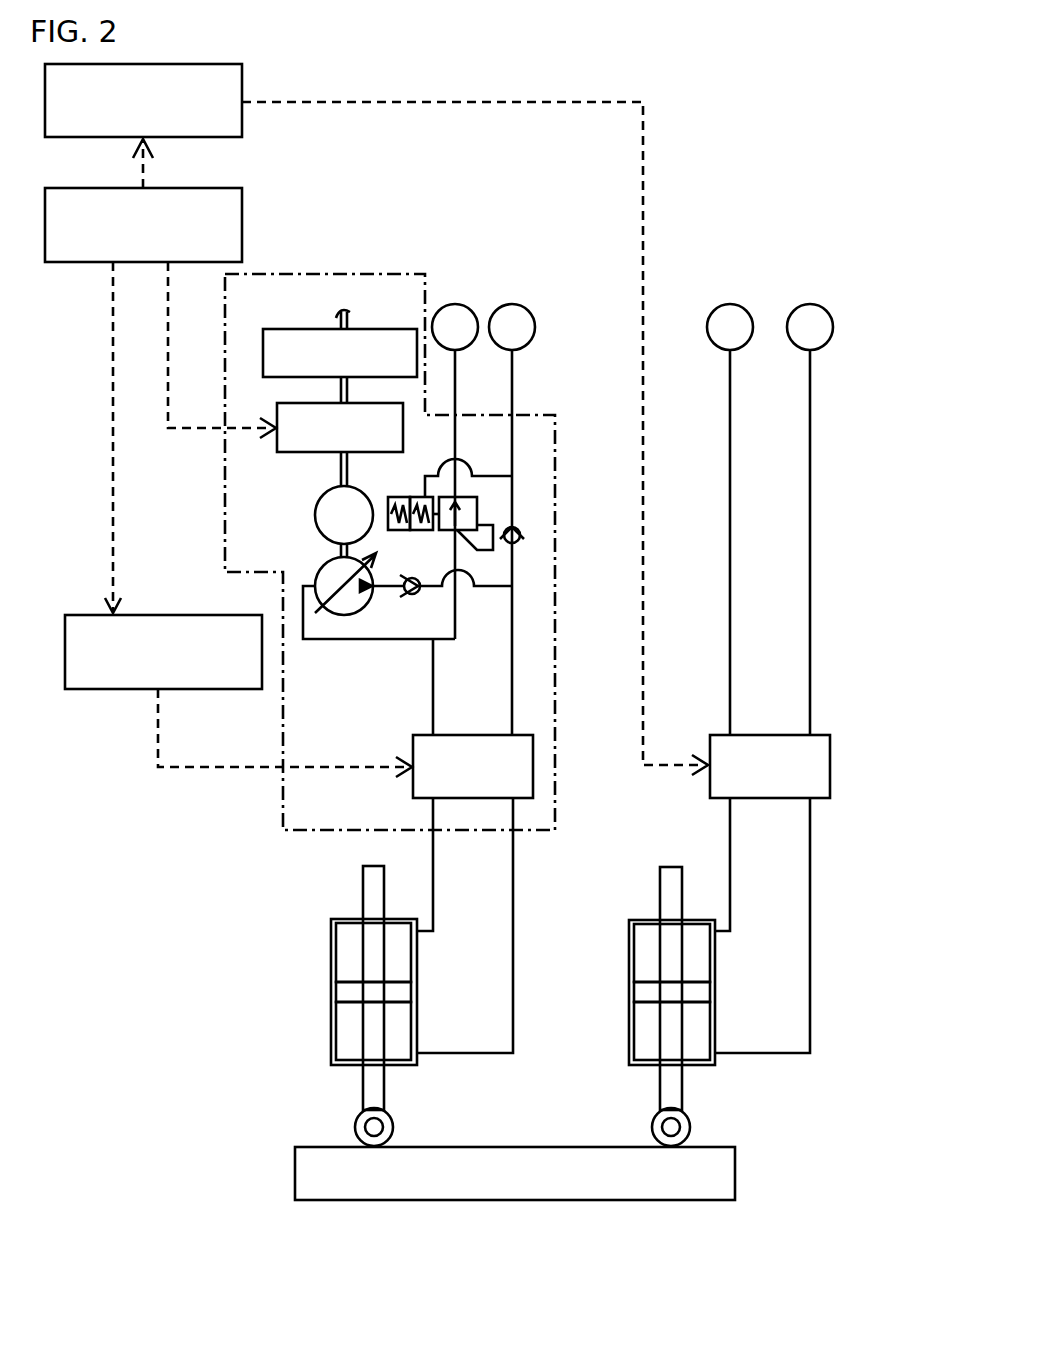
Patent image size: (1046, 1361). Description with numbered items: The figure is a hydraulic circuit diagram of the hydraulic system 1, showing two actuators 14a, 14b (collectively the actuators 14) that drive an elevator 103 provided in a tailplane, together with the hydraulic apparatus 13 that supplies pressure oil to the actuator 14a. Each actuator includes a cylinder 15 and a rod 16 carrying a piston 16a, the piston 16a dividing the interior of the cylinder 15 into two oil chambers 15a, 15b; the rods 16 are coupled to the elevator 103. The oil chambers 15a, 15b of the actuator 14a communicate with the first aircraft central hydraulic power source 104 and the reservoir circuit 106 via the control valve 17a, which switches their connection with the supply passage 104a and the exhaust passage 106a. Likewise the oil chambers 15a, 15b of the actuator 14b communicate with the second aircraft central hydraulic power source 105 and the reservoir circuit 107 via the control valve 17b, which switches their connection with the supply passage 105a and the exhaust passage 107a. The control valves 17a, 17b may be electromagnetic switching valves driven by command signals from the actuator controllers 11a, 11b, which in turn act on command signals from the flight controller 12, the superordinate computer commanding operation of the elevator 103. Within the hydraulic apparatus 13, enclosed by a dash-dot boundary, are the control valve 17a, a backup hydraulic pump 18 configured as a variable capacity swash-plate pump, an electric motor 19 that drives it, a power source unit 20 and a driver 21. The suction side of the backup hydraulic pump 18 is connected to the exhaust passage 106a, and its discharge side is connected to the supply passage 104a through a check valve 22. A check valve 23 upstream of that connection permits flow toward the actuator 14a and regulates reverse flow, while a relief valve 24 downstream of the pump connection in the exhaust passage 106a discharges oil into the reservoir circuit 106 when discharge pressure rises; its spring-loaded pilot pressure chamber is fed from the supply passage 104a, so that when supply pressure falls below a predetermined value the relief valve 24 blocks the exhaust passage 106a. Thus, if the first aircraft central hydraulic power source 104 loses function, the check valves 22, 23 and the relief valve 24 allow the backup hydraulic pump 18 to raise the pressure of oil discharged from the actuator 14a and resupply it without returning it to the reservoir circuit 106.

The hydraulic system 1 is at (227, 1200).
The actuator controller 11a is at (130, 690).
The actuator controller 11b is at (242, 124).
The flight controller 12 is at (242, 222).
The hydraulic apparatus 13 is at (265, 795).
The actuator 14 is at (490, 1052).
The actuator 14a is at (418, 1032).
The actuator 14b is at (728, 1085).
The cylinder 15 is at (333, 960).
The oil chamber 15a is at (350, 945).
The oil chamber 15b is at (350, 1035).
The rod 16 is at (388, 1081).
The piston 16a is at (350, 995).
The control valve 17a is at (533, 748).
The control valve 17b is at (832, 748).
The backup hydraulic pump 18 is at (315, 572).
The electric motor 19 is at (315, 505).
The power source unit 20 is at (263, 341).
The driver 21 is at (277, 410).
The check valve 22 is at (402, 600).
The check valve 23 is at (527, 523).
The relief valve 24 is at (485, 503).
The elevator 103 is at (497, 1182).
The first aircraft central hydraulic power source 104 is at (512, 302).
The supply passage 104a is at (514, 375).
The second aircraft central hydraulic power source 105 is at (810, 303).
The supply passage 105a is at (812, 495).
The reservoir circuit 106 is at (455, 302).
The exhaust passage 106a is at (420, 340).
The reservoir circuit 107 is at (730, 303).
The exhaust passage 107a is at (728, 496).